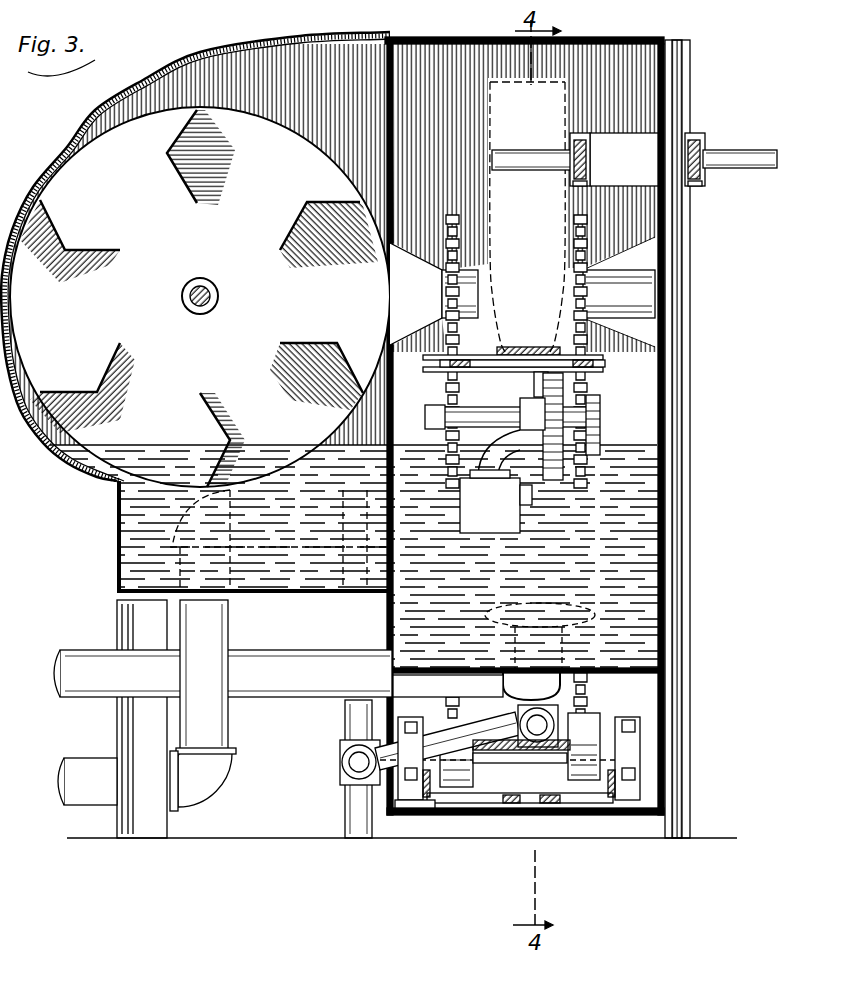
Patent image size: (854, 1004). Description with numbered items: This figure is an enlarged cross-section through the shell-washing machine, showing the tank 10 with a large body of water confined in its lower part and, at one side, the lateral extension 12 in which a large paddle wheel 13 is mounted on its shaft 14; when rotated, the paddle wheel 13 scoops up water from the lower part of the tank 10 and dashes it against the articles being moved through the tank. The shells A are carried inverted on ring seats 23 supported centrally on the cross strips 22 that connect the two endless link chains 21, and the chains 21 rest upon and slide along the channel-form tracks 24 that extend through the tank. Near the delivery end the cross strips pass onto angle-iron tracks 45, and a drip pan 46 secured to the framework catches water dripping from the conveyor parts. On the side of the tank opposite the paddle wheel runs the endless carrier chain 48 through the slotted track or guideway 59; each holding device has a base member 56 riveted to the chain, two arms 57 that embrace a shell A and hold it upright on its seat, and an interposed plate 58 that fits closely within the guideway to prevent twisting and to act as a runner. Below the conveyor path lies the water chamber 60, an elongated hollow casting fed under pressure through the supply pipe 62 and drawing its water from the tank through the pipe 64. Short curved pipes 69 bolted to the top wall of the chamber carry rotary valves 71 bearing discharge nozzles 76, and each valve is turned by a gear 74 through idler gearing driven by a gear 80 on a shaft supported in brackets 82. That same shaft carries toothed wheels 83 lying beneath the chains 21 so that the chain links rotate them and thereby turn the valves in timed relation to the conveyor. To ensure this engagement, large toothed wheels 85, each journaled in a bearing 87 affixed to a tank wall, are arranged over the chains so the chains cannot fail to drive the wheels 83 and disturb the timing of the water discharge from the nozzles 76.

The tank 10 is at (667, 490).
The lateral extension 12 is at (222, 64).
The paddle wheel 13 is at (343, 174).
The shaft 14 is at (214, 294).
The link chains 21 is at (583, 850).
The cross strips 22 is at (593, 356).
The ring 23 is at (503, 354).
The tracks 24 is at (507, 364).
The tracks 45 is at (435, 798).
The drip pan 46 is at (408, 817).
The carrier chain 48 is at (577, 174).
The base member 56 is at (572, 163).
The arms 57 is at (775, 180).
The plate 58 is at (580, 186).
The track 59 is at (717, 195).
The water chamber 60 is at (523, 505).
The supply pipe 62 is at (230, 620).
The pipe 64 is at (297, 647).
The curved pipes 69 is at (577, 473).
The valve 71 is at (590, 432).
The gear 74 is at (560, 440).
The discharge nozzles 76 is at (534, 380).
The gear 80 is at (563, 389).
The brackets 82 is at (440, 418).
The toothed wheels 83 is at (586, 398).
The large toothed wheels 85 is at (452, 230).
The bearing 87 is at (425, 290).
The shells A is at (572, 73).